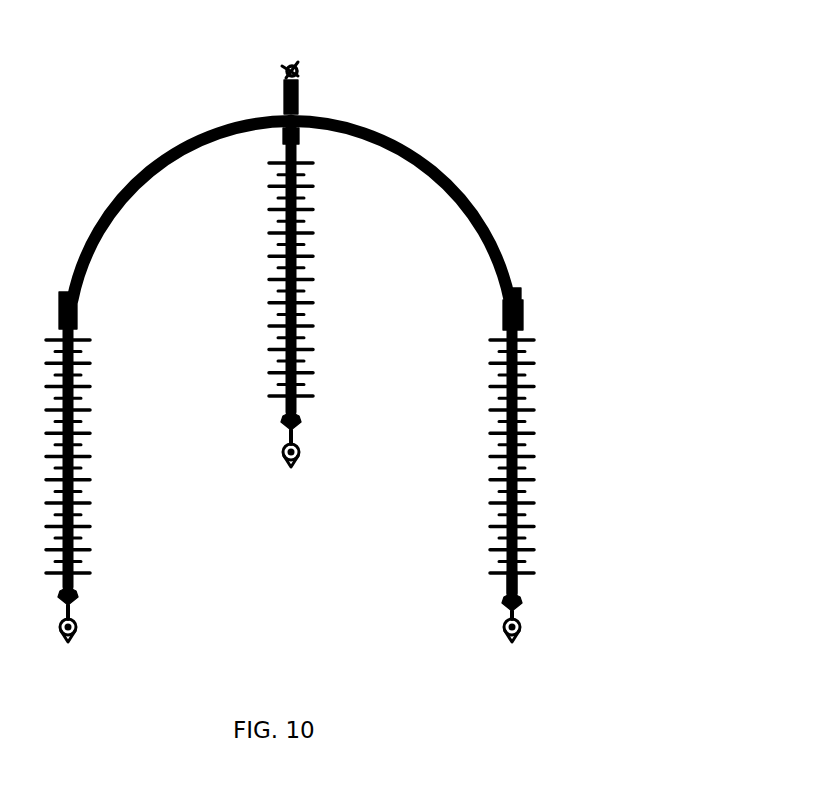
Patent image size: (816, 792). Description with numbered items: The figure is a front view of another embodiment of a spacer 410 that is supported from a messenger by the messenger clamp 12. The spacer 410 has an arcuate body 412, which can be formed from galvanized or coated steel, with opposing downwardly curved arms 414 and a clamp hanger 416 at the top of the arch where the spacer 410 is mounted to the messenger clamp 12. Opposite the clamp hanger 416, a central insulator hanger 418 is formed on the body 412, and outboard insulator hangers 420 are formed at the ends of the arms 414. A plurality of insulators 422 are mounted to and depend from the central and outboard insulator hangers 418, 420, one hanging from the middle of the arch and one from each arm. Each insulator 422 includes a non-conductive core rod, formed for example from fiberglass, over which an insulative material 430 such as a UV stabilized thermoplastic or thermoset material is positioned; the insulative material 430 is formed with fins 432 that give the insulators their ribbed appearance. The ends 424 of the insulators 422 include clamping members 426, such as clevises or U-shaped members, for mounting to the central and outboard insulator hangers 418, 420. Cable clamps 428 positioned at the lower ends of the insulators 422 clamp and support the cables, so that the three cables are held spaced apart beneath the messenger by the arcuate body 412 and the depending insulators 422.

The messenger clamp 12 is at (288, 63).
The spacer 410 is at (522, 212).
The arcuate body 412 is at (430, 157).
The downwardly curved arms 414 is at (515, 287).
The clamp hanger 416 is at (302, 102).
The central insulator hanger 418 is at (300, 143).
The outboard insulator hangers 420 is at (520, 312).
The insulators 422 is at (522, 468).
The ends of the insulators 424 is at (520, 587).
The clamping members 426 is at (525, 600).
The cable clamps 428 is at (522, 633).
The insulative material 430 is at (522, 391).
The fins 432 is at (525, 409).